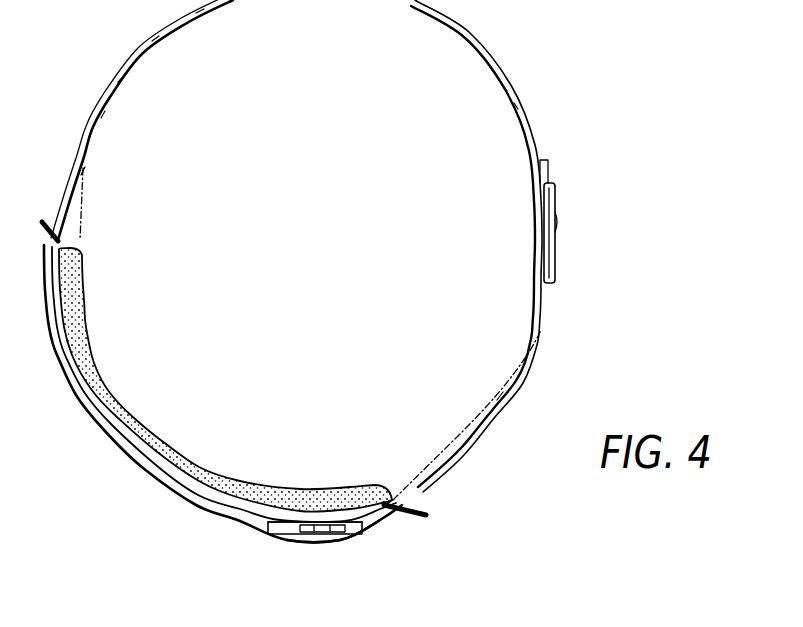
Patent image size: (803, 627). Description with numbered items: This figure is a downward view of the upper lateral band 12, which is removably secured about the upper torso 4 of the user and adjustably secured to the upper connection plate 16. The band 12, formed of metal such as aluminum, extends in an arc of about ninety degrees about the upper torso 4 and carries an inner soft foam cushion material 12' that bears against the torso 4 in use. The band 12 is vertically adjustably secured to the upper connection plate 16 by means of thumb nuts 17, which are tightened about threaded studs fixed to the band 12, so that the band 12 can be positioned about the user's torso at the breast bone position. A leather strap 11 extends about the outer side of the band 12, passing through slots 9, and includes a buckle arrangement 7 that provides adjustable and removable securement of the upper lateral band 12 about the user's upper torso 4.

The upper torso 4 is at (317, 250).
The buckle arrangement 7 is at (548, 263).
The slots 9 is at (60, 240).
The leather strap 11 is at (163, 485).
The upper lateral band 12 is at (224, 416).
The inner soft foam cushion material 12' is at (225, 380).
The upper connection plate 16 is at (362, 529).
The thumb nuts 17 is at (320, 535).